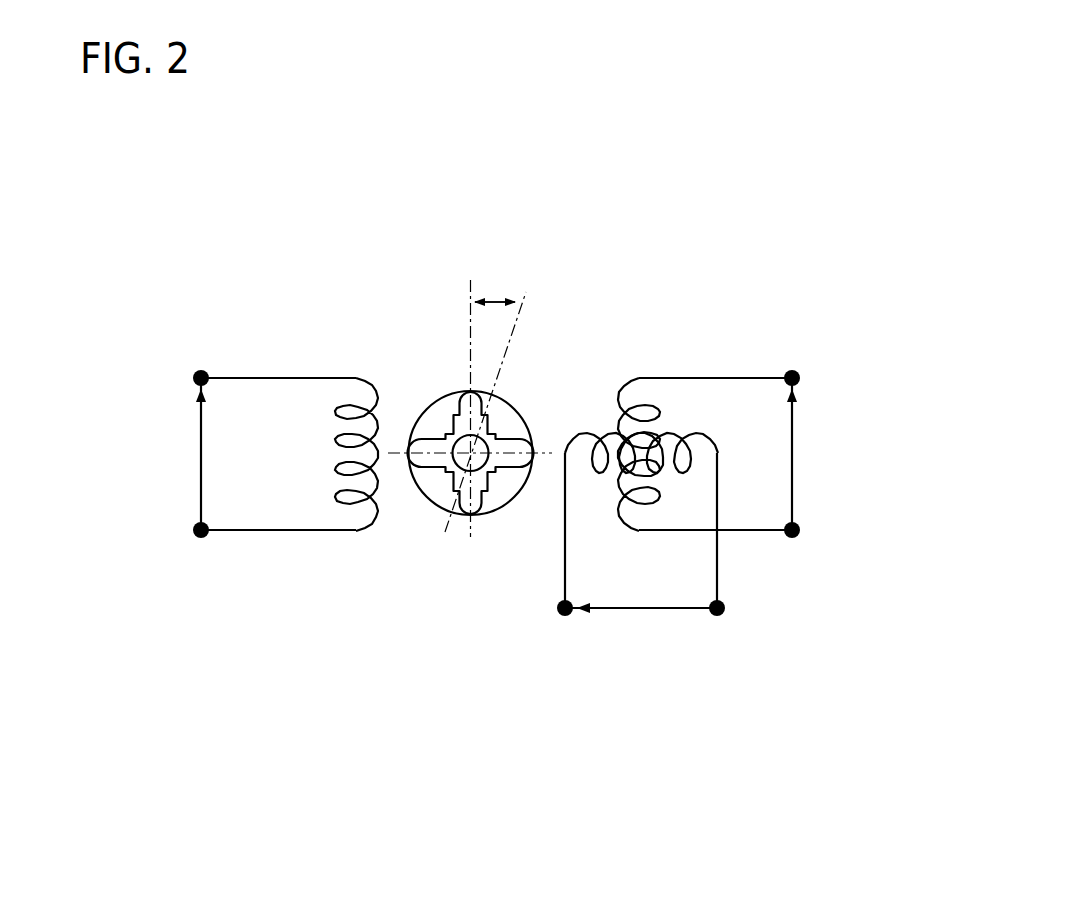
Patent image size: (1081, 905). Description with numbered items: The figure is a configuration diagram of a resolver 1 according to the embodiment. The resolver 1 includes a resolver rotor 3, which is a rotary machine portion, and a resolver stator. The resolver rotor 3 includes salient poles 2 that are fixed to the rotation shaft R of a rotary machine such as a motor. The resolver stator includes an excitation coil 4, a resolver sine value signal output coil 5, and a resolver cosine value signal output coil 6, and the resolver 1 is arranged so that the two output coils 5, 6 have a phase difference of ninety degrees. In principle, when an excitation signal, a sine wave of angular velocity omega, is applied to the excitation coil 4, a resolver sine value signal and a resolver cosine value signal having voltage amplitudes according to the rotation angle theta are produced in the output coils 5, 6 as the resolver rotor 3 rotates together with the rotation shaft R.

The resolver 1 is at (677, 223).
The salient poles 2 is at (462, 413).
The resolver rotor 3 is at (457, 469).
The rotation shaft R is at (482, 448).
The excitation coil 4 is at (257, 539).
The resolver sine value signal output coil 5 is at (728, 568).
The resolver cosine value signal output coil 6 is at (695, 370).